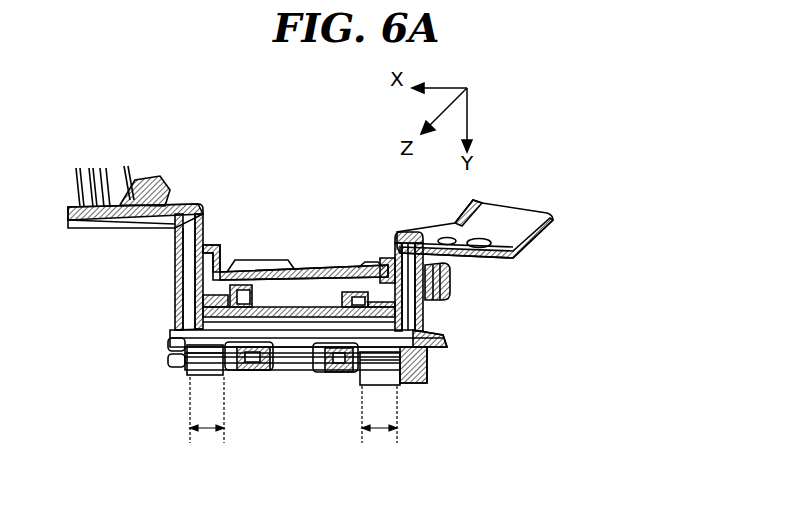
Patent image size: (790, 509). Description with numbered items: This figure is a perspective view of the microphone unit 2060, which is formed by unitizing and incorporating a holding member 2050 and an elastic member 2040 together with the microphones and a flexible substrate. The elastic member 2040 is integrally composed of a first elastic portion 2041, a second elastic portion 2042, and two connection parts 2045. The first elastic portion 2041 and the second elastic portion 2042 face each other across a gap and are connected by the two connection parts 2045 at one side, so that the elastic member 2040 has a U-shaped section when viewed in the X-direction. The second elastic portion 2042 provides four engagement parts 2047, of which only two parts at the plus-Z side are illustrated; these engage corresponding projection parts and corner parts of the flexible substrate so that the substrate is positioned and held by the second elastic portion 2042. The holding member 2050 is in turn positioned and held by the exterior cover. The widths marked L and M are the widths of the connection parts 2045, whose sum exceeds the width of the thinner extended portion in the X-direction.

The elastic member 2040 is at (538, 303).
The first elastic portion 2041 is at (430, 378).
The second elastic portion 2042 is at (447, 338).
The connection parts 2045 is at (200, 373).
The engagement parts 2047 is at (317, 375).
The holding member 2050 is at (178, 275).
The microphone unit 2060 is at (618, 173).